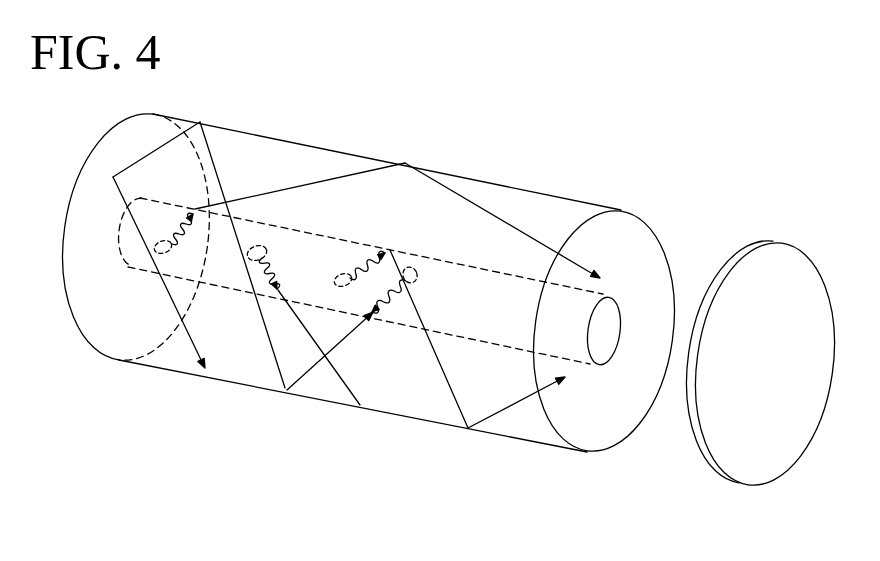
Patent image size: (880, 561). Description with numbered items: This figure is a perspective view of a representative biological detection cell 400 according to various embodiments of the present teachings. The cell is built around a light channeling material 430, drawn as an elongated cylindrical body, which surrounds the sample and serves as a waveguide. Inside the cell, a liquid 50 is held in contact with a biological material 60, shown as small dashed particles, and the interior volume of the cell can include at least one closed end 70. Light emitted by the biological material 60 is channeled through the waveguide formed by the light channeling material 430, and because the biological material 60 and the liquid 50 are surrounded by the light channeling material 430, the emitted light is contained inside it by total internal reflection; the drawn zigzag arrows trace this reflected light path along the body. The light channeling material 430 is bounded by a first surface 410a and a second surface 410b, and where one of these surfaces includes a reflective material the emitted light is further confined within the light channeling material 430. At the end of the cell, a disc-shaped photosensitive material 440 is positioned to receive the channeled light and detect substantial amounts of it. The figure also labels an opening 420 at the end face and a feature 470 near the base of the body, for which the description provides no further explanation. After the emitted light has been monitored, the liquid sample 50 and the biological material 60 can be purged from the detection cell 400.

The detection cell 400 is at (622, 127).
The first surface 410a is at (348, 150).
The second surface 410b is at (300, 230).
The aperture 420 is at (620, 323).
The light channeling material 430 is at (642, 238).
The photosensitive material 440 is at (765, 455).
The housing bottom edge 470 is at (593, 453).
The liquid 50 is at (212, 264).
The biological material 60 is at (413, 279).
The closed end 70 is at (343, 342).